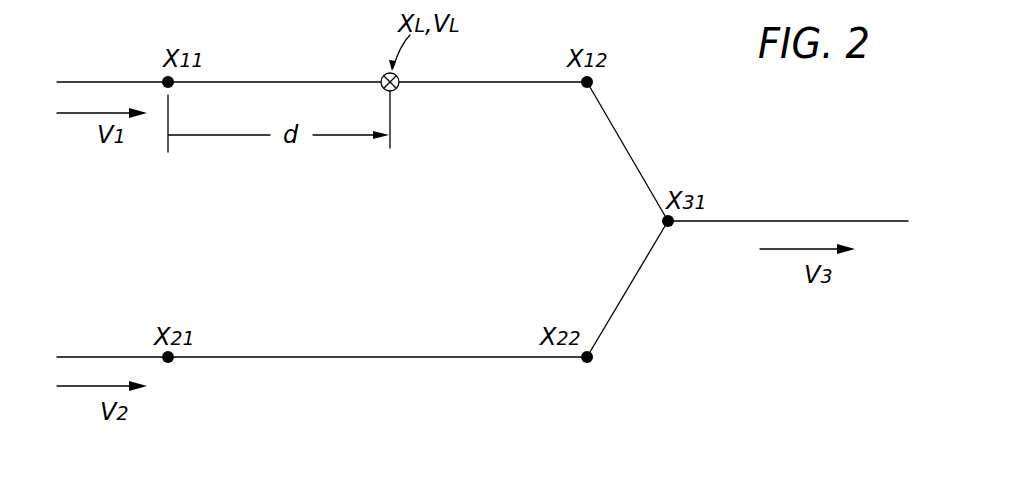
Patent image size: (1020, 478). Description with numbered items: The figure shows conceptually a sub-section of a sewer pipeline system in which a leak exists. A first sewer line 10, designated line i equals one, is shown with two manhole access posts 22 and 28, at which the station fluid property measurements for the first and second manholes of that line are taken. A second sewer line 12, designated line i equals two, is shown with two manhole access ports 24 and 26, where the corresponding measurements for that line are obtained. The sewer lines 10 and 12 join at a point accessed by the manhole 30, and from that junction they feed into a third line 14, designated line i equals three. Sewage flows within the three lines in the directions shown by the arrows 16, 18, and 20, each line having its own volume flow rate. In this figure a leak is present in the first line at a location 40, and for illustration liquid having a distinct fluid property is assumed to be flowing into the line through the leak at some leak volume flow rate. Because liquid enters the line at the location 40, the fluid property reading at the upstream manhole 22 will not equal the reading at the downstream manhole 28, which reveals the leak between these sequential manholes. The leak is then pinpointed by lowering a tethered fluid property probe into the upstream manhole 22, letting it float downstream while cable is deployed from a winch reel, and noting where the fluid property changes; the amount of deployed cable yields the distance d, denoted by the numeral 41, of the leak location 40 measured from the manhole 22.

The sewer line 10 is at (273, 80).
The second sewer line 12 is at (378, 360).
The third line 14 is at (832, 219).
The arrow 16 is at (63, 115).
The arrow 18 is at (68, 389).
The arrow 20 is at (768, 251).
The manhole access post 22 is at (165, 80).
The manhole access port 24 is at (173, 360).
The manhole access port 26 is at (590, 362).
The manhole access post 28 is at (584, 88).
The manhole 30 is at (672, 226).
The leak location 40 is at (400, 88).
The distance d 41 is at (221, 137).